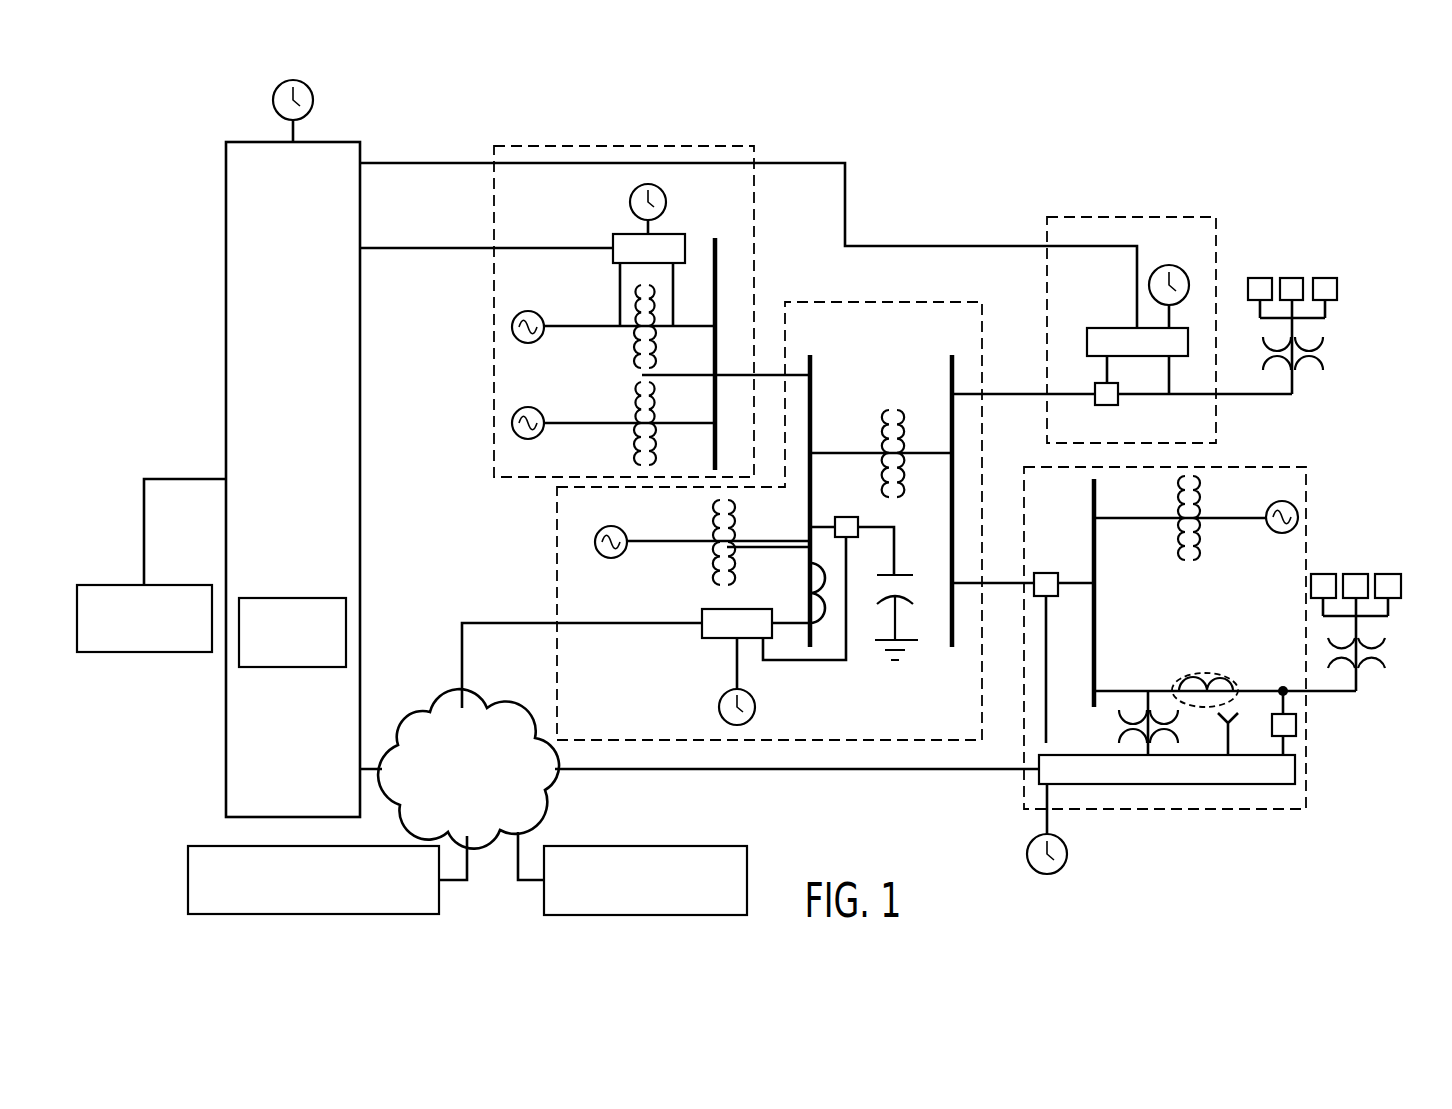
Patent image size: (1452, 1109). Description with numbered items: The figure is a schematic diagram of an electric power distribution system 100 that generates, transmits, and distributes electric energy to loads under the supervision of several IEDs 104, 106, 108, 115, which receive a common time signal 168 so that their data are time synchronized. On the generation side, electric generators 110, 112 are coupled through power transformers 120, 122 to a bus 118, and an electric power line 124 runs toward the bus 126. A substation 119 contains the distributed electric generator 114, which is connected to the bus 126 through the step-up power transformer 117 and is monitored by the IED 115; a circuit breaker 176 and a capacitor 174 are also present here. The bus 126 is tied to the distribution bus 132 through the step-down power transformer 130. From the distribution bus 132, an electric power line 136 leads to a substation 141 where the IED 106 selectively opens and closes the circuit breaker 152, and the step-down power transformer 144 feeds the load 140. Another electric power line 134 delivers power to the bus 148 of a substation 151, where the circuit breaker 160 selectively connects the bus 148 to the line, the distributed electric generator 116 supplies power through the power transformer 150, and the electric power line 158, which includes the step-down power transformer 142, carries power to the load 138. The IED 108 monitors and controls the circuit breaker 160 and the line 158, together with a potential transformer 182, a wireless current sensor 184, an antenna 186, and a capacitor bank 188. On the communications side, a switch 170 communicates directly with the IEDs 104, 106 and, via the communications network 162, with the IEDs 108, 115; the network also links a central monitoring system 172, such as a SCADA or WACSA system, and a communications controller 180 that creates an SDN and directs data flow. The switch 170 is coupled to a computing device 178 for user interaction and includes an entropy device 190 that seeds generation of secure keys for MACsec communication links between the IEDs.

The electric power distribution system 100 is at (1305, 130).
The IED 104 is at (628, 234).
The IED 106 is at (1100, 328).
The IED 108 is at (1220, 784).
The electric generator 110 is at (530, 310).
The electric generator 112 is at (530, 407).
The electric generator 114 is at (613, 527).
The IED 115 is at (740, 609).
The electric generator 116 is at (1276, 534).
The power transformer 117 is at (712, 572).
The bus 118 is at (718, 240).
The substation 119 is at (556, 570).
The power transformer 120 is at (628, 357).
The power transformer 122 is at (628, 455).
The electric power line 124 is at (768, 372).
The bus 126 is at (812, 383).
The power transformer 130 is at (893, 410).
The distribution bus 132 is at (952, 632).
The electric power line 134 is at (991, 583).
The electric power line 136 is at (1075, 394).
The load 138 is at (1356, 574).
The load 140 is at (1325, 278).
The substation 141 is at (1068, 217).
The power transformer 142 is at (1380, 657).
The power transformer 144 is at (1325, 355).
The bus 148 is at (1094, 480).
The power transformer 150 is at (1194, 476).
The substation 151 is at (1285, 809).
The circuit breaker 152 is at (1107, 405).
The electric power line 158 is at (1330, 695).
The circuit breaker 160 is at (1052, 573).
The communications network 162 is at (413, 712).
The common time signal 168 is at (313, 103).
The switch 170 is at (360, 479).
The central monitoring system 172 is at (188, 872).
The capacitor 174 is at (905, 575).
The circuit breaker 176 is at (845, 517).
The computing device 178 is at (143, 652).
The communications controller 180 is at (628, 846).
The potential transformer 182 is at (1115, 727).
The wireless current sensor 184 is at (1205, 672).
The antenna 186 is at (1238, 717).
The capacitor bank 188 is at (1296, 725).
The entropy device 190 is at (266, 598).